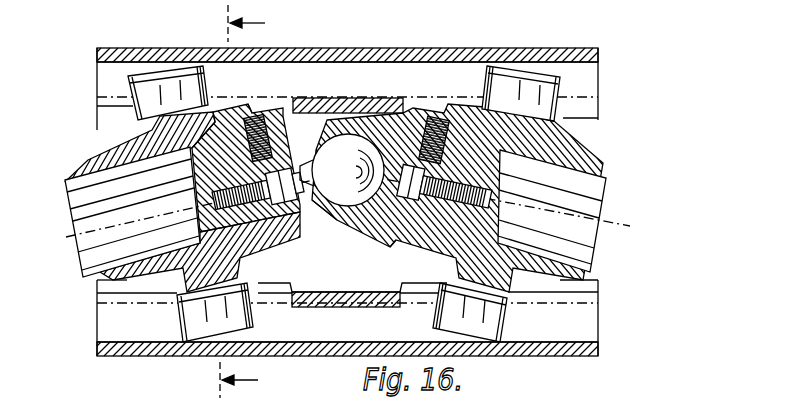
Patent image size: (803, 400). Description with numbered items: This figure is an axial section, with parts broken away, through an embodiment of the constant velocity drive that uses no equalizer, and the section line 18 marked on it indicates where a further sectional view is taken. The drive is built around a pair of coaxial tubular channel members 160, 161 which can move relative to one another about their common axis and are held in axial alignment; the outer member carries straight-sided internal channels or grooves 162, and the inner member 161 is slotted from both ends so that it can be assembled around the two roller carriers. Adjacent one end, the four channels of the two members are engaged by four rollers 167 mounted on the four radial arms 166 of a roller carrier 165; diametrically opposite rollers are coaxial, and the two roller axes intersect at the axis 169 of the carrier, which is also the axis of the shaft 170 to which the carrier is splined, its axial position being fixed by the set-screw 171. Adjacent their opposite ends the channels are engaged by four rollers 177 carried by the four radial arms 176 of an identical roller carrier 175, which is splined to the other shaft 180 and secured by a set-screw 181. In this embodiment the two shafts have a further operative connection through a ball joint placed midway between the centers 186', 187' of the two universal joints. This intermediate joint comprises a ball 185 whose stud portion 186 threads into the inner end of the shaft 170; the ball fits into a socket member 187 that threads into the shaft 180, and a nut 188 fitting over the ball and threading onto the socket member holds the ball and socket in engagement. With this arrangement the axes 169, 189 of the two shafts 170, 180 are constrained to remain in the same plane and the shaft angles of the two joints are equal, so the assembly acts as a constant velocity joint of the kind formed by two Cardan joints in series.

The section line 18 is at (248, 201).
The outer channel member 160 is at (384, 48).
The inner channel member 161 is at (345, 99).
The internal channels 162 is at (582, 83).
The roller carrier 165 is at (130, 153).
The radial arms 166 is at (212, 128).
The rollers 167 is at (206, 116).
The axis of roller carrier 169 is at (78, 228).
The shaft 170 is at (92, 246).
The set-screw 171 is at (260, 120).
The roller carrier 175 is at (593, 163).
The radial arms 176 is at (540, 132).
The rollers 177 is at (543, 92).
The shaft 180 is at (587, 200).
The set-screw 181 is at (433, 120).
The ball 185 is at (322, 150).
The stud portion 186 is at (336, 167).
The center of universal joint 186' is at (211, 191).
The socket member 187 is at (379, 249).
The center of universal joint 187' is at (483, 189).
The nut 188 is at (337, 221).
The axis of shaft 189 is at (603, 230).